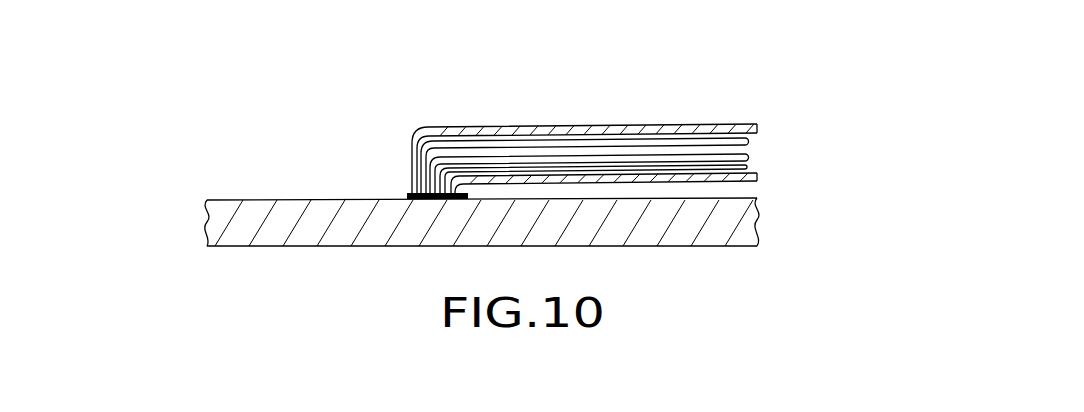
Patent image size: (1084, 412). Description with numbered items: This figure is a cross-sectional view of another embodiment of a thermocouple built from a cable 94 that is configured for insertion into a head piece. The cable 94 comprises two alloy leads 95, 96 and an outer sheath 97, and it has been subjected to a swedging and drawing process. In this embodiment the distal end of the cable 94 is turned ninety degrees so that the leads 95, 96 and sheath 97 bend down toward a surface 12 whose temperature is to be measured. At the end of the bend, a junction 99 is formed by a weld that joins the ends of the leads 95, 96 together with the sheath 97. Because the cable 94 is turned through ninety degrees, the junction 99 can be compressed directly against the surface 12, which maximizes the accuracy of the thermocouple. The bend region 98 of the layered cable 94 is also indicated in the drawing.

The surface 12 is at (258, 200).
The cable 94 is at (599, 122).
The alloy lead 95 is at (749, 145).
The alloy lead 96 is at (749, 161).
The outer sheath 97 is at (695, 130).
The inner layers at bend 98 is at (413, 180).
The junction 99 is at (409, 196).